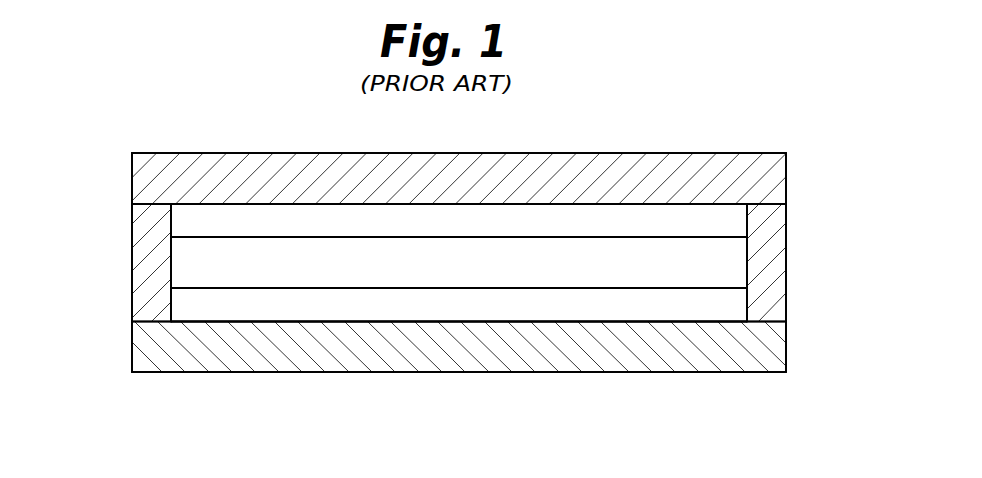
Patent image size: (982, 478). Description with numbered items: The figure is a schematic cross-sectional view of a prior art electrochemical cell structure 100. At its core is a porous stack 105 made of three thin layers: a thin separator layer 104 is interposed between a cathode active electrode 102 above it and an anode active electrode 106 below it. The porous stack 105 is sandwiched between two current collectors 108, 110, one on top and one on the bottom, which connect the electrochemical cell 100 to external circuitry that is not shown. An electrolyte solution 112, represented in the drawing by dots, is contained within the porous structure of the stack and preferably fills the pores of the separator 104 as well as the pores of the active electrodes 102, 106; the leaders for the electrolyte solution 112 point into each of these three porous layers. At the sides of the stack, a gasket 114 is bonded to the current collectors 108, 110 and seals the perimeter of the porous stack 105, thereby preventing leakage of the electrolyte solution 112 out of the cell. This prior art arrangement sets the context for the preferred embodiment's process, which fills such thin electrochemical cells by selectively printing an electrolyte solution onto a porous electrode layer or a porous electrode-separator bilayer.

The electrochemical cell structure 100 is at (707, 122).
The cathode active electrode 102 is at (738, 220).
The separator layer 104 is at (725, 260).
The porous stack 105 is at (132, 205).
The anode active electrode 106 is at (730, 303).
The current collector 108 is at (770, 177).
The current collector 110 is at (758, 347).
The electrolyte solution 112 is at (537, 223).
The gasket 114 is at (151, 220).